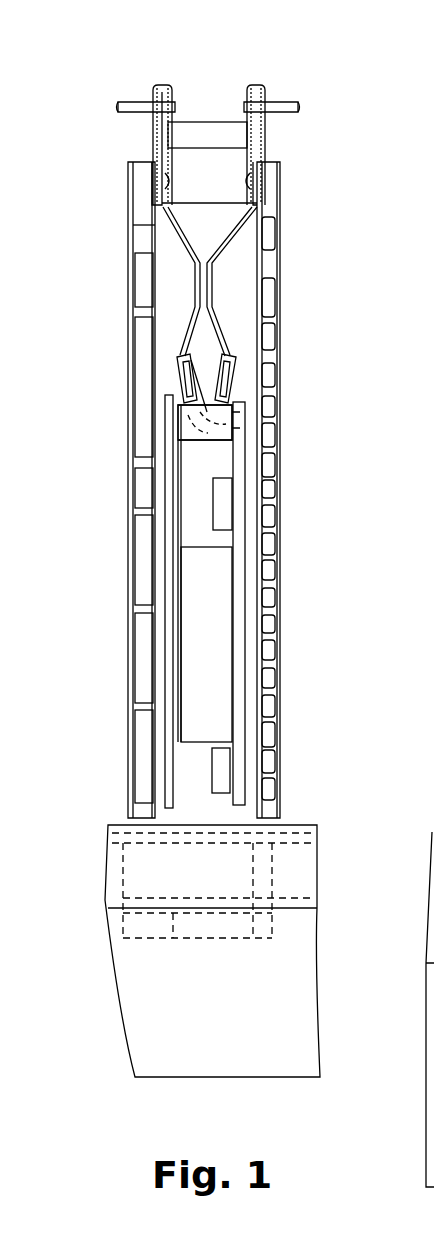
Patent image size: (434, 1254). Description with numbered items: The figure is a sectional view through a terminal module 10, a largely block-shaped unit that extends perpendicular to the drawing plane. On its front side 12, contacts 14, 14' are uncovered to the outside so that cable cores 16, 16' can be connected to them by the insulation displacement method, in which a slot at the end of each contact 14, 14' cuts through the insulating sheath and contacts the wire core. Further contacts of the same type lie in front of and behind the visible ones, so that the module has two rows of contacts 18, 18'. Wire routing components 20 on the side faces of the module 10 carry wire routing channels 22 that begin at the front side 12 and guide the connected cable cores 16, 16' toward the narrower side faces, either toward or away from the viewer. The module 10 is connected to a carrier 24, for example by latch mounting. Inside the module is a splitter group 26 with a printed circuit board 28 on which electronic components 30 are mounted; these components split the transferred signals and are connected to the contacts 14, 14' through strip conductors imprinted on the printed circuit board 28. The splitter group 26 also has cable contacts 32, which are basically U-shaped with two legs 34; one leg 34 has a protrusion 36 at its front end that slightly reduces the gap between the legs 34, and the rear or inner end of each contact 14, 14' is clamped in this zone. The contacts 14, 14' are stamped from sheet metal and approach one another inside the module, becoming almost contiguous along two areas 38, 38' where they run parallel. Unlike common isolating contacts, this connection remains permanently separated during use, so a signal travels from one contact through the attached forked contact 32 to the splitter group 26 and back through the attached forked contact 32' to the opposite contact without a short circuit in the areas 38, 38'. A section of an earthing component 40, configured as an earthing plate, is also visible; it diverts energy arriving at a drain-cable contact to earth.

The terminal module 10 is at (362, 386).
The front side 12 is at (208, 88).
The contact 14 is at (129, 196).
The contact 14' is at (288, 196).
The cable core 16 is at (130, 127).
The cable core 16' is at (286, 129).
The row of contacts 18 is at (145, 127).
The row of contacts 18' is at (275, 127).
The wire routing component 20 is at (128, 418).
The wire routing channel 22 is at (275, 516).
The carrier 24 is at (205, 1065).
The splitter group 26 is at (222, 722).
The printed circuit board 28 is at (238, 653).
The electronic component 30 is at (225, 523).
The cable contact 32 is at (255, 565).
The forked contact 32' is at (154, 396).
The leg 34 is at (187, 346).
The protrusion 36 is at (209, 343).
The area 38 is at (140, 281).
The area 38' is at (270, 281).
The earthing component 40 is at (170, 552).